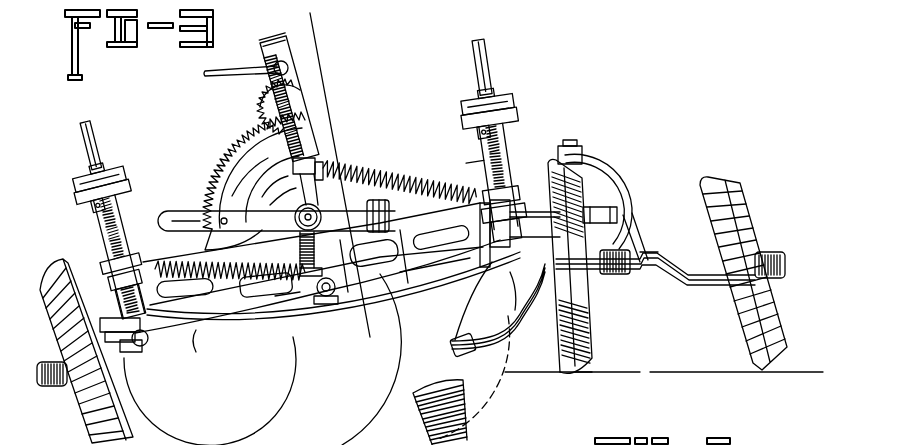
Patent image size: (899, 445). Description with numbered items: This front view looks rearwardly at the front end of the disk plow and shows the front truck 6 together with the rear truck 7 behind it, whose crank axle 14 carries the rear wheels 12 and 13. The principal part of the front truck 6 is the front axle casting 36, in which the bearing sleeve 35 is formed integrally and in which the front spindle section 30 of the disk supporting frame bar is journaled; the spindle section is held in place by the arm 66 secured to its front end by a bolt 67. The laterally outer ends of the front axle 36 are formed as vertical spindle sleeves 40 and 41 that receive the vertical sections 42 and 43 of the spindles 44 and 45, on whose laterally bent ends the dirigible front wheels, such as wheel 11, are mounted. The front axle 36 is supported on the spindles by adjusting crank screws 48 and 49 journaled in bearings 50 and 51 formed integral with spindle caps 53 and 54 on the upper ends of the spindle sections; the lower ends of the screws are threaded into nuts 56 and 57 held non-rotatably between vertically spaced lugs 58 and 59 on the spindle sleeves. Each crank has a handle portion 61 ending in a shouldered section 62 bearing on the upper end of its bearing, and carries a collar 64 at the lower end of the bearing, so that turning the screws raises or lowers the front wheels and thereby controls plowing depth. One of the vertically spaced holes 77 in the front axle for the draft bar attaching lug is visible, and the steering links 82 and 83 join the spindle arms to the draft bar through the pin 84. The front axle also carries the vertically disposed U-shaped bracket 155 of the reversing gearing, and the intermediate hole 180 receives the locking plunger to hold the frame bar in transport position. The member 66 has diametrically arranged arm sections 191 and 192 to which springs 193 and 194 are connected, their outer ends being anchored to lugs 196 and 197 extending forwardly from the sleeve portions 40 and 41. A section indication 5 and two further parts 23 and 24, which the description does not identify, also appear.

The section line 5- 5 is at (310, 13).
The front truck 6 is at (214, 320).
The rear truck 7 is at (668, 258).
The dirigible wheel 11 is at (578, 364).
The rear wheel 12 is at (780, 288).
The rear wheel 13 is at (448, 384).
The crank axle 14 is at (627, 272).
The gear web slot 23 is at (262, 200).
The sleeve 24 is at (398, 202).
The front spindle section 30 is at (322, 250).
The bearing sleeve 35 is at (312, 248).
The front axle casting 36 is at (243, 302).
The spindle sleeve 40 is at (176, 333).
The spindle sleeve 41 is at (490, 183).
The vertical spindle section 42 is at (478, 150).
The vertical spindle section 43 is at (120, 216).
The spindle 44 is at (147, 353).
The spindle 45 is at (521, 330).
The adjusting crank screw 48 is at (96, 222).
The adjusting crank screw 49 is at (502, 150).
The bearing 50 is at (88, 188).
The bearing 51 is at (500, 118).
The spindle cap 53 is at (118, 190).
The spindle cap 54 is at (465, 108).
The nut 56 is at (108, 305).
The nut 57 is at (520, 215).
The lug 58 is at (104, 272).
The lug 59 is at (122, 318).
The handle portion 61 is at (88, 128).
The shouldered section 62 is at (93, 166).
The collar 64 is at (86, 206).
The arm 66 is at (250, 215).
The bolt 67 is at (348, 172).
The holes 77 is at (357, 260).
The link 82 is at (212, 322).
The link 83 is at (440, 260).
The pin 84 is at (325, 300).
The U-shaped bracket 155 is at (285, 50).
The hole 180 is at (218, 212).
The arm section 191 is at (316, 160).
The arm section 192 is at (283, 296).
The spring 193 is at (395, 175).
The spring 194 is at (185, 262).
The lug 196 is at (475, 197).
The lug 197 is at (135, 260).